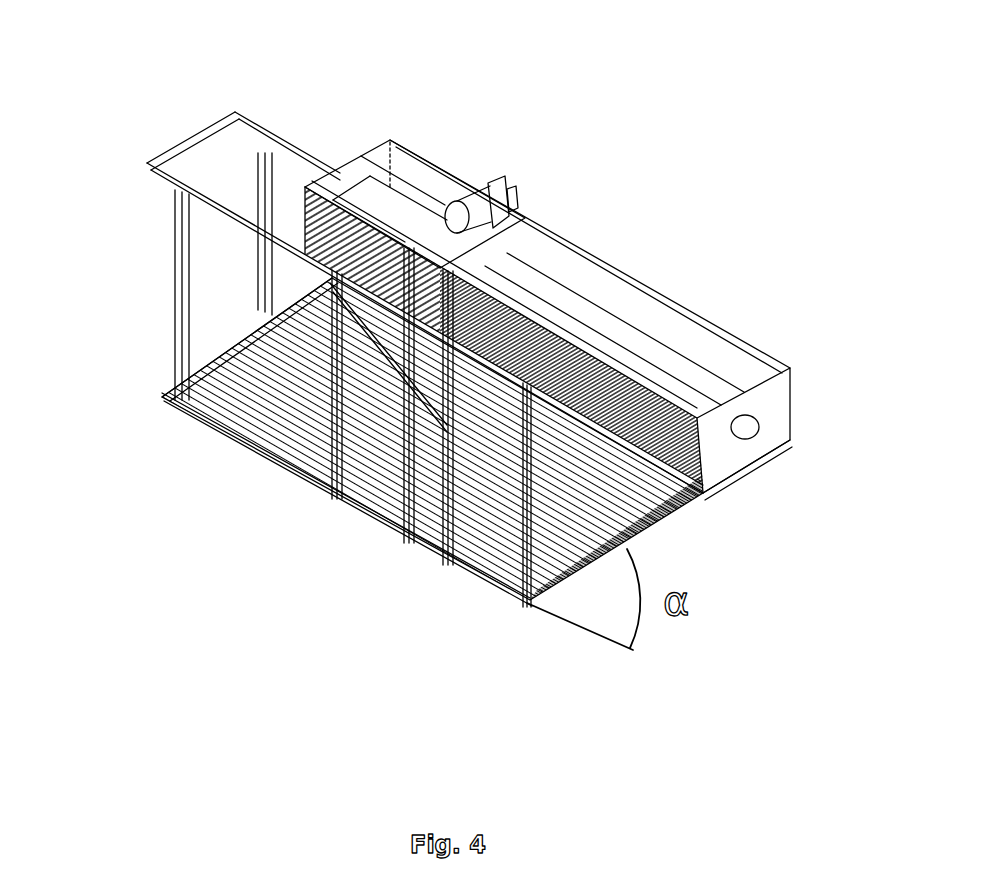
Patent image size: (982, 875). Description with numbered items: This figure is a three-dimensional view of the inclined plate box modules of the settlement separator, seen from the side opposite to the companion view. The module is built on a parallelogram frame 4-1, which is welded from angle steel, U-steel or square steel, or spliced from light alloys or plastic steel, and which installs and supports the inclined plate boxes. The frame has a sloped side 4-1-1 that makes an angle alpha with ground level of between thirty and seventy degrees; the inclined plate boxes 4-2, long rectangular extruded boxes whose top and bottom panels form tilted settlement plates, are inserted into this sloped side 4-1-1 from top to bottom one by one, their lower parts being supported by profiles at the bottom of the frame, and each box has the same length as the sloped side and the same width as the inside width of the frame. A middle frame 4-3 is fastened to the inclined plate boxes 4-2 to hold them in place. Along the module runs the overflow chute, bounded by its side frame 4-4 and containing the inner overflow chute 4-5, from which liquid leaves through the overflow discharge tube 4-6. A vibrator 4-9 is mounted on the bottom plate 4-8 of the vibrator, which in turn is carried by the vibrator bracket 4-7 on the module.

The parallelogram frame 4-1 is at (291, 157).
The sloped side of the parallelogram frame 4-1-1 is at (210, 357).
The inclined plate box 4-2 is at (370, 262).
The middle frame 4-3 is at (477, 393).
The side frame of overflow chute 4-4 is at (653, 297).
The inner overflow chute 4-5 is at (670, 357).
The overflow discharge tube 4-6 is at (752, 418).
The vibrator bracket 4-7 is at (417, 357).
The bottom plate of the vibrator 4-8 is at (512, 190).
The vibrator 4-9 is at (480, 197).